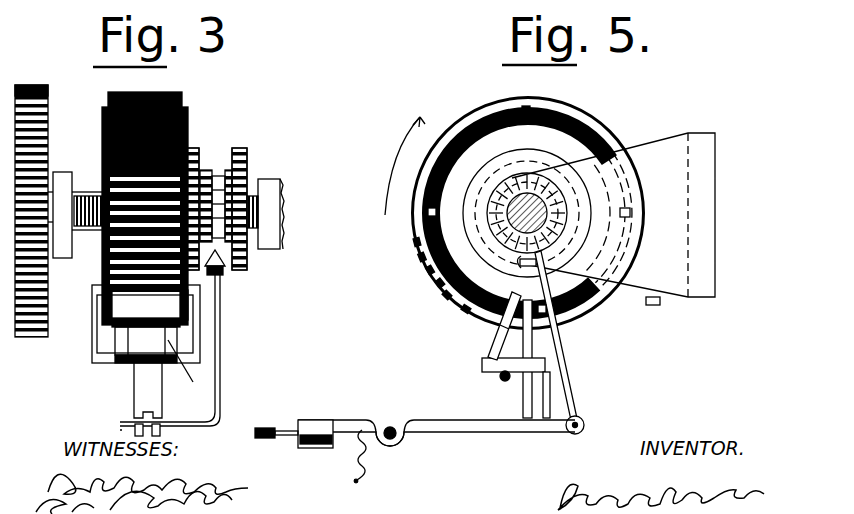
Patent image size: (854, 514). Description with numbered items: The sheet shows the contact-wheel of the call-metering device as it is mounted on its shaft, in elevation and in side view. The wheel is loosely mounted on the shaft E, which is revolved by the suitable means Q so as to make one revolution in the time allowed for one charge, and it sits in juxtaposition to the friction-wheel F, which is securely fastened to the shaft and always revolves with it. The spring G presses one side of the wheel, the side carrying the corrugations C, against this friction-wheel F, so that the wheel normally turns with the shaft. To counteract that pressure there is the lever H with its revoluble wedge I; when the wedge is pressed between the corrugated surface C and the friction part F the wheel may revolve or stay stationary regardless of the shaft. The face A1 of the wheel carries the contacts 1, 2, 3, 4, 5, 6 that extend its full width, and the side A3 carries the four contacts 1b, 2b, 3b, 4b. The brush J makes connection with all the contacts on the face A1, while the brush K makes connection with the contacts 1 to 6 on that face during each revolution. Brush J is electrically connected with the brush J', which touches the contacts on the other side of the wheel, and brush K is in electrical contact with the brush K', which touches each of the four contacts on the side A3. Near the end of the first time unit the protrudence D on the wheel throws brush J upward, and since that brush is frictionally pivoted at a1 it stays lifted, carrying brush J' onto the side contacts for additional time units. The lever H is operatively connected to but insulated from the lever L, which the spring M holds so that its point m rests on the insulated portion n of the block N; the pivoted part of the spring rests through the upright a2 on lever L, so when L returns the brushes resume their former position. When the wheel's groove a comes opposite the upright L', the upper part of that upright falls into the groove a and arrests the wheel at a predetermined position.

In FIG. 3, the face of the contact-wheel A1 is at (182, 97).
In FIG. 3, the shaft E is at (78, 170).
In FIG. 3, the spring G is at (87, 188).
In FIG. 3, the suitable means for revolving the shaft Q is at (27, 336).
In FIG. 3, the corrugations C is at (198, 150).
In FIG. 3, the friction-wheel F is at (240, 148).
In FIG. 3, the revoluble wedge I is at (226, 270).
In FIG. 3, the lever H is at (221, 340).
In FIG. 5, the lever H is at (563, 368).
In FIG. 3, the brush K' is at (174, 324).
In FIG. 3, the brush J' is at (126, 324).
In FIG. 3, the brush J is at (118, 354).
In FIG. 3, the brush K is at (182, 373).
In FIG. 5, the side of the contact-wheel A3 is at (492, 213).
In FIG. 5, the contact 1 is at (468, 312).
In FIG. 5, the contact 2 is at (443, 297).
In FIG. 5, the contact 3 is at (436, 284).
In FIG. 5, the contact 4 is at (426, 271).
In FIG. 5, the contact 5 is at (418, 258).
In FIG. 5, the contact 6 is at (413, 243).
In FIG. 5, the contact 1b is at (527, 318).
In FIG. 5, the contact 2b is at (428, 212).
In FIG. 5, the contact 3b is at (524, 116).
In FIG. 5, the contact 4b is at (630, 212).
In FIG. 5, the protrudence D is at (580, 324).
In FIG. 5, the groove a is at (505, 335).
In FIG. 5, the frictional pivot of brush J a1 is at (501, 377).
In FIG. 5, the upright a2 is at (547, 410).
In FIG. 5, the lever L is at (436, 441).
In FIG. 5, the upright L' is at (497, 359).
In FIG. 5, the point of lever L m is at (330, 430).
In FIG. 5, the insulated portion of block N n is at (300, 440).
In FIG. 5, the block N is at (313, 448).
In FIG. 5, the spring M is at (366, 466).